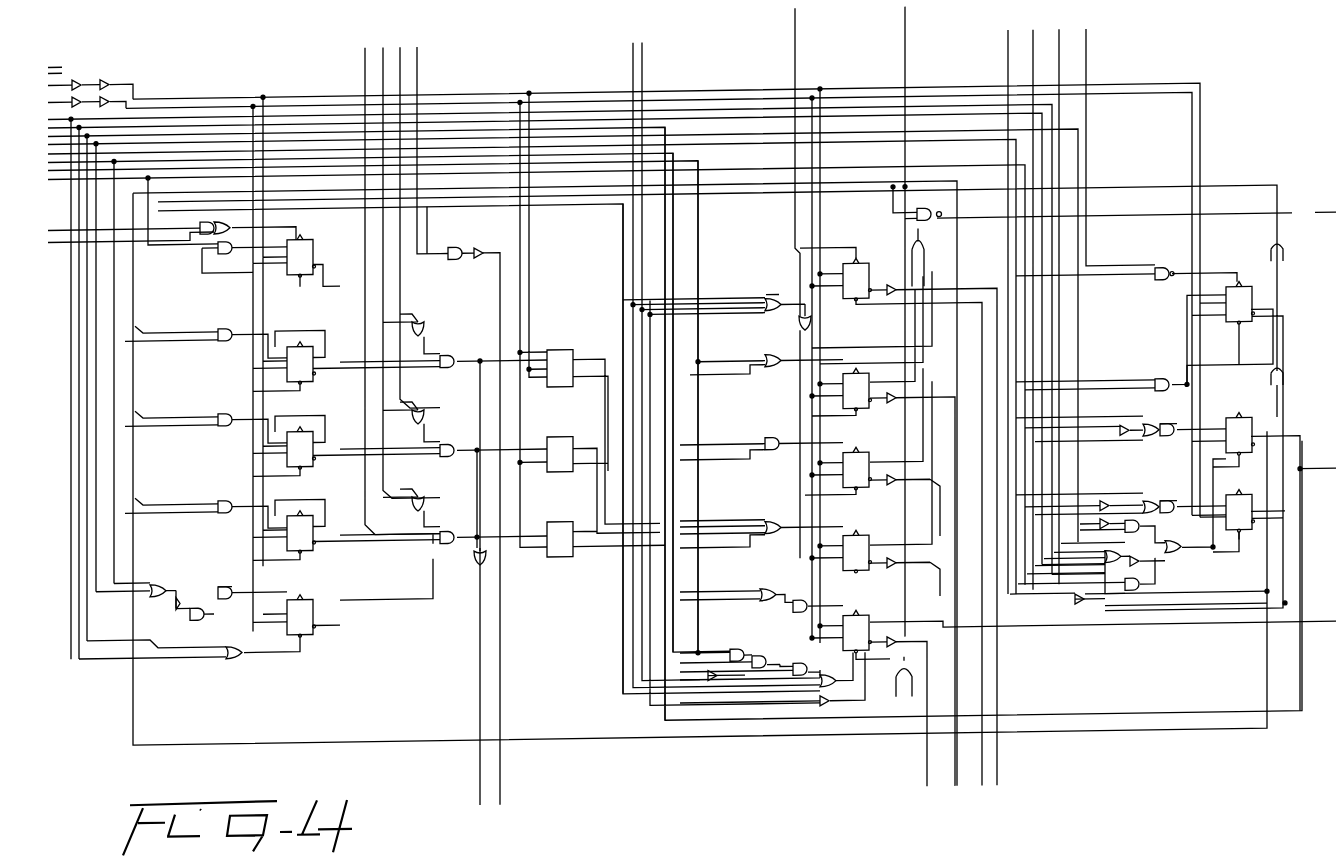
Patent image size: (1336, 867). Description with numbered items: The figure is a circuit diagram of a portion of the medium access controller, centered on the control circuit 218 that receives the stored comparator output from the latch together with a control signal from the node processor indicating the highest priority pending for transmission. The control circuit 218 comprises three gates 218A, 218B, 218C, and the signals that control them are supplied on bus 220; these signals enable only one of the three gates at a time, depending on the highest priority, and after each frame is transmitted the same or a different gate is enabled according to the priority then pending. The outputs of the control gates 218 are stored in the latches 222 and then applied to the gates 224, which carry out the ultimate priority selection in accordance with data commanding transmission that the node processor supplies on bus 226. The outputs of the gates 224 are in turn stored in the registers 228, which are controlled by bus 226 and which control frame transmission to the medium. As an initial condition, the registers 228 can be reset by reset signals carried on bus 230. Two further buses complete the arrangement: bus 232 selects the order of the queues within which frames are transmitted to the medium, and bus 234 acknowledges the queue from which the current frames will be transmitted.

The control circuit 218 is at (475, 287).
The control gate 218A is at (456, 354).
The control gate 218B is at (456, 442).
The control gate 218C is at (446, 556).
The bus 220 is at (405, 34).
The latches 222 is at (588, 307).
The gates 224 is at (765, 270).
The bus 226 is at (865, 56).
The registers 228 is at (870, 241).
The bus 230 is at (708, 54).
The bus 232 is at (49, 201).
The bus 234 is at (1059, 786).